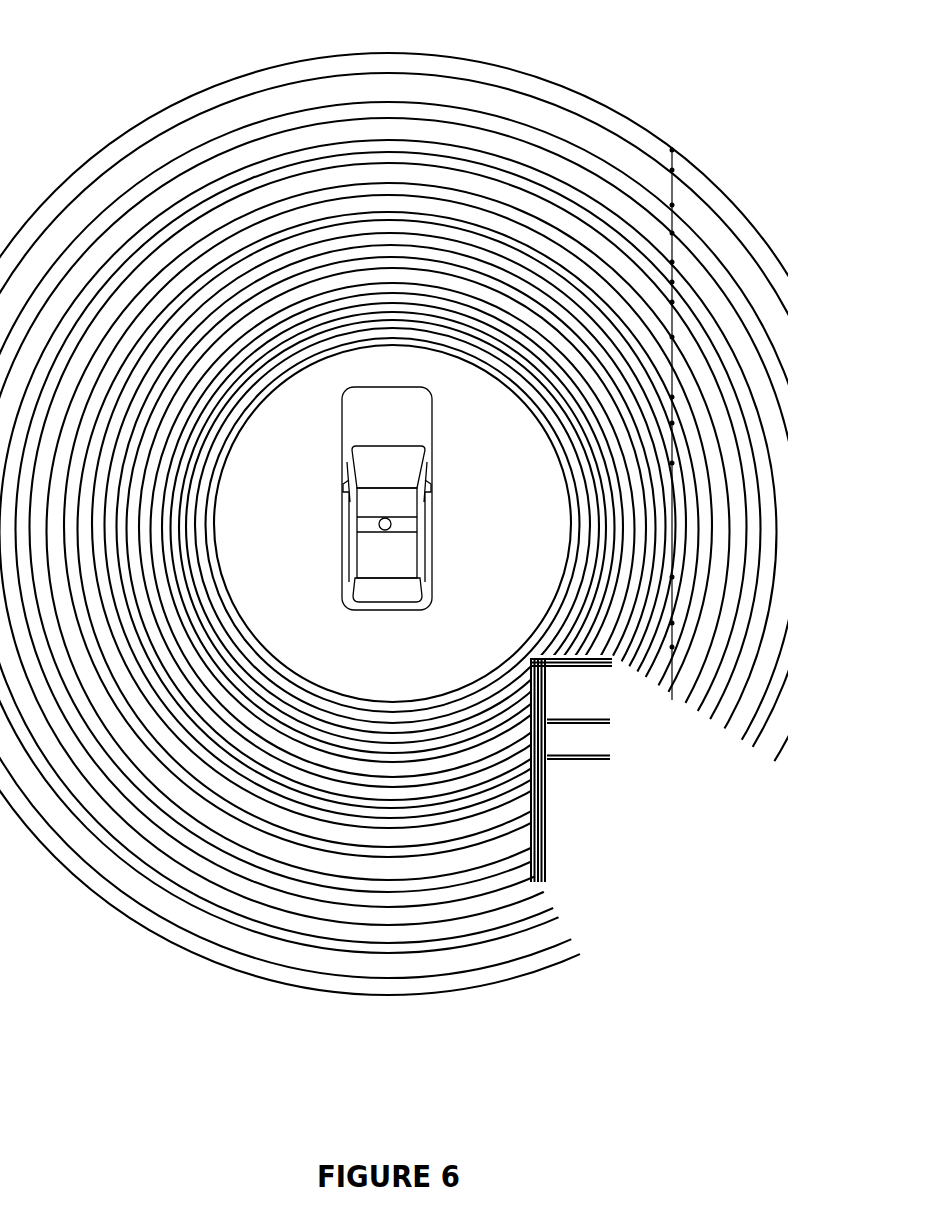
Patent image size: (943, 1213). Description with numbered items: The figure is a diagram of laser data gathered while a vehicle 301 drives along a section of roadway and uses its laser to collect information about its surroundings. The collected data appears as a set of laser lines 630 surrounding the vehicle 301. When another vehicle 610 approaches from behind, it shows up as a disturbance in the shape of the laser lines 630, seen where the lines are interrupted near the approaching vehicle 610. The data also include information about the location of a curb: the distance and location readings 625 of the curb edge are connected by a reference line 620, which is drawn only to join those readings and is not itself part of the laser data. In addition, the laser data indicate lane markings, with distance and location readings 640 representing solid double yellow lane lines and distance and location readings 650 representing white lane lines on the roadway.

The vehicle 301 is at (342, 600).
The another vehicle 610 is at (532, 706).
The reference line 620 is at (635, 113).
The distance and location readings of the edge of the curb 625 is at (672, 234).
The laser lines 630 is at (390, 95).
The distance and location readings 640 is at (262, 115).
The distance and location readings 650 is at (492, 928).